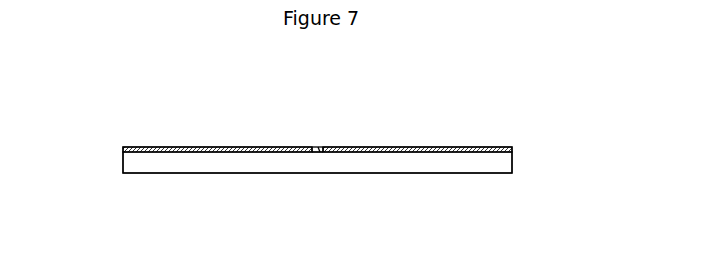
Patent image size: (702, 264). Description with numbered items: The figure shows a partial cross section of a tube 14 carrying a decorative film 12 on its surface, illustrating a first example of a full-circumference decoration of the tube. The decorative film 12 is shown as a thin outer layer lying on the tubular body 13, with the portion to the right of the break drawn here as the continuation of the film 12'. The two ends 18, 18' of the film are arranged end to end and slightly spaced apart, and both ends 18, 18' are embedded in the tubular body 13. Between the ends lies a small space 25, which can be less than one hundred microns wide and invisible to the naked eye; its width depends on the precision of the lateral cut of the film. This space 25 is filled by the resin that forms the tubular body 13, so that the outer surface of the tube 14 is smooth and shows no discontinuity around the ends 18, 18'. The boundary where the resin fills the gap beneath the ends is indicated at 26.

The tube 14 is at (113, 108).
The tubular body 13 is at (213, 162).
The decorative film 12 is at (217, 128).
The second electrode layer 12' is at (417, 120).
The end of the decorative film 18 is at (302, 118).
The end of the decorative film 18' is at (335, 118).
The space 25 is at (315, 132).
The gap bottom 26 is at (320, 150).